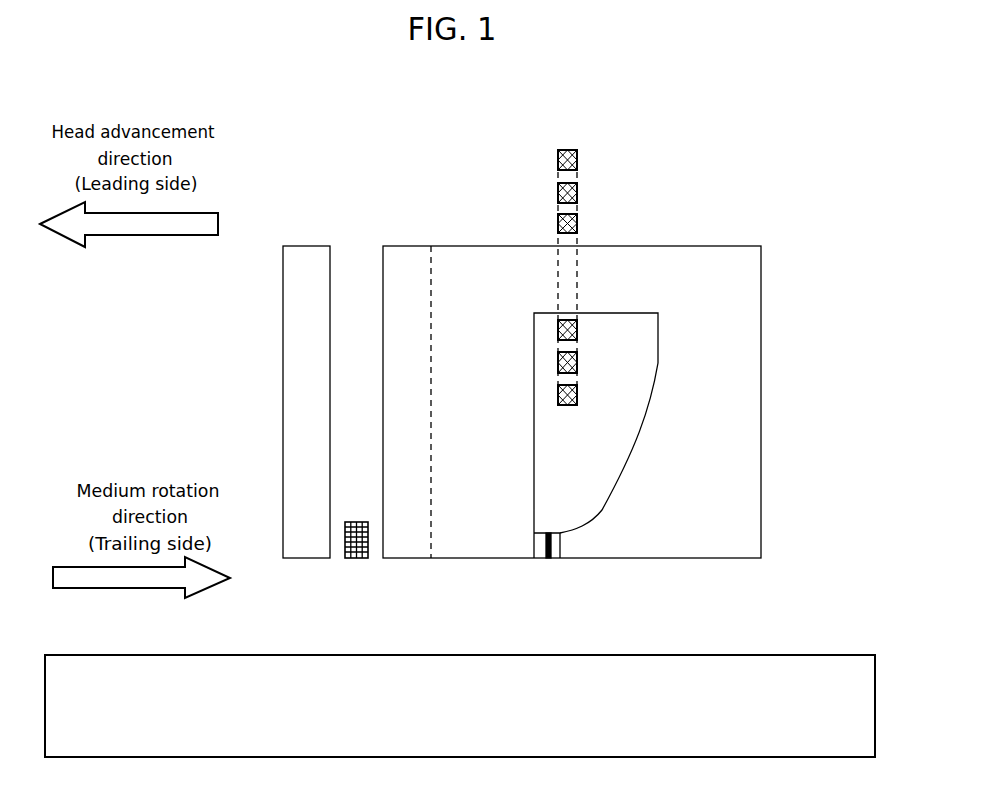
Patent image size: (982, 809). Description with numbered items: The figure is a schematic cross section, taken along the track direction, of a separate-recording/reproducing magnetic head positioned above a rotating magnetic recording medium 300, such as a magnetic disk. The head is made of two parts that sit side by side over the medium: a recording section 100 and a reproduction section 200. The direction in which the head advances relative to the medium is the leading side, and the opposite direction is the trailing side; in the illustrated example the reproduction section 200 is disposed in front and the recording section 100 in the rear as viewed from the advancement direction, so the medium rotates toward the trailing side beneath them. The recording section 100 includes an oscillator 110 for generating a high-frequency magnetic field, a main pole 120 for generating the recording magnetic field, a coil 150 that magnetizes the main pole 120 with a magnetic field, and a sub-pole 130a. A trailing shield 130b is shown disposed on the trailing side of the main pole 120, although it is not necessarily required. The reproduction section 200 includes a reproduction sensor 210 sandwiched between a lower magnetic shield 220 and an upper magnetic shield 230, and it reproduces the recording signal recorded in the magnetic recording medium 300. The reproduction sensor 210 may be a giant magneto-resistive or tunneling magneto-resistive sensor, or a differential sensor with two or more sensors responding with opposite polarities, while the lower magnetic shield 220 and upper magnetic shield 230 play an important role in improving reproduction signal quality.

The recording section 100 is at (609, 397).
The oscillator 110 is at (555, 552).
The main pole 120 is at (503, 560).
The sub-pole 130a is at (748, 384).
The trailing shield 130b is at (588, 556).
The coil 150 is at (578, 223).
The reproduction section 200 is at (351, 419).
The reproduction sensor 210 is at (357, 548).
The lower magnetic shield 220 is at (310, 257).
The upper magnetic shield 230 is at (403, 257).
The magnetic recording medium 300 is at (778, 668).